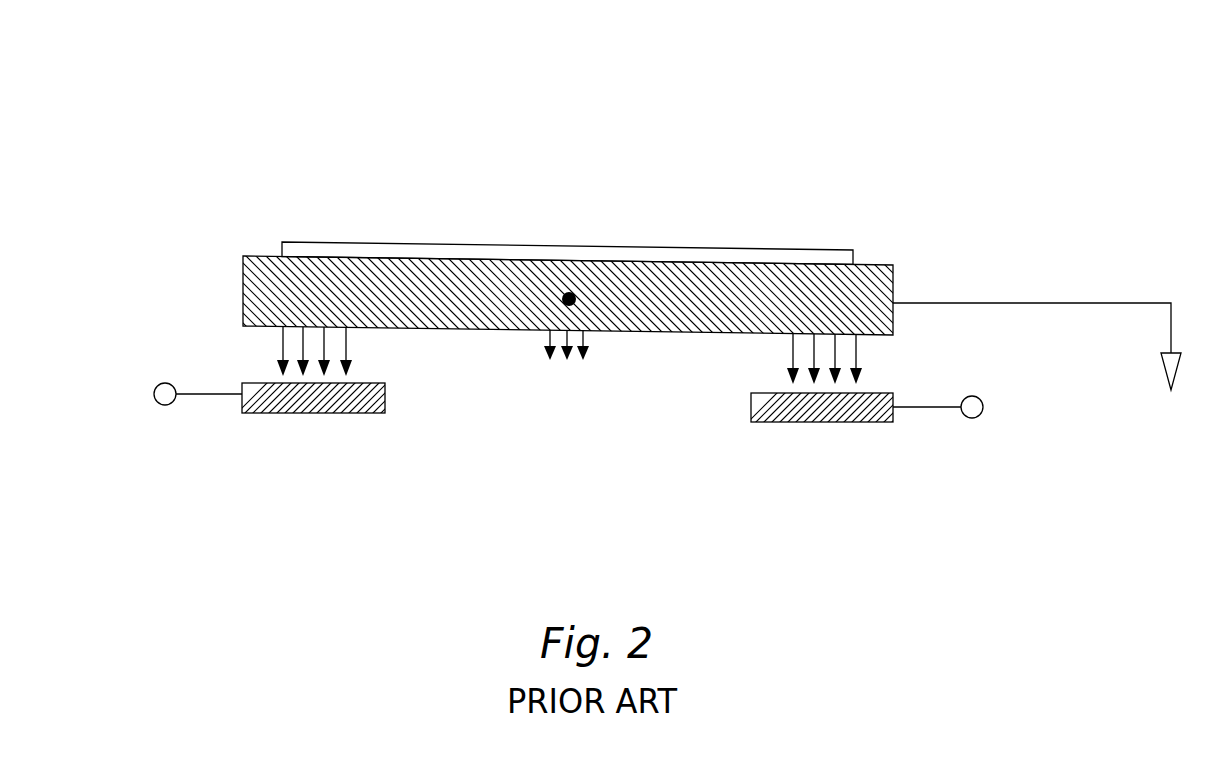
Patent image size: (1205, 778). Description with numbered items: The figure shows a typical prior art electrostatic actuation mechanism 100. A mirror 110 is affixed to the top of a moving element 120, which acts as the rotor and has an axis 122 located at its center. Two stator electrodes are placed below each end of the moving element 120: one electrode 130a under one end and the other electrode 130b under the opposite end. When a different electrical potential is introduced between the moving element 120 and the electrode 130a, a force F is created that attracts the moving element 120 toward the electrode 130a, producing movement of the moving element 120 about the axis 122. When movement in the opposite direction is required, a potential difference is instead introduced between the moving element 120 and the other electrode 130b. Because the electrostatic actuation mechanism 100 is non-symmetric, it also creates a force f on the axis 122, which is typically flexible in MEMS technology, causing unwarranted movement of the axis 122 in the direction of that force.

The electrostatic actuation mechanism 100 is at (203, 152).
The mirror 110 is at (502, 255).
The moving element 120 is at (788, 297).
The axis 122 is at (569, 299).
The electrode 130a is at (355, 467).
The electrode 130b is at (868, 478).